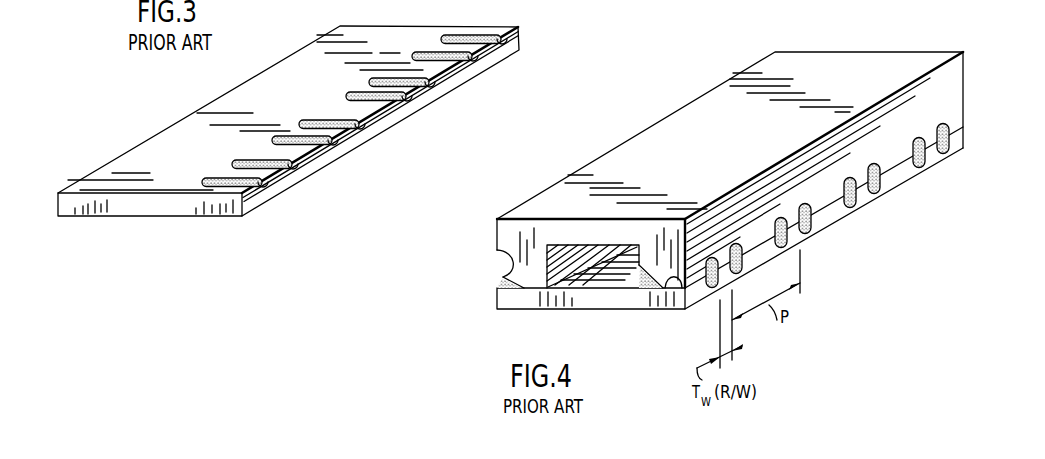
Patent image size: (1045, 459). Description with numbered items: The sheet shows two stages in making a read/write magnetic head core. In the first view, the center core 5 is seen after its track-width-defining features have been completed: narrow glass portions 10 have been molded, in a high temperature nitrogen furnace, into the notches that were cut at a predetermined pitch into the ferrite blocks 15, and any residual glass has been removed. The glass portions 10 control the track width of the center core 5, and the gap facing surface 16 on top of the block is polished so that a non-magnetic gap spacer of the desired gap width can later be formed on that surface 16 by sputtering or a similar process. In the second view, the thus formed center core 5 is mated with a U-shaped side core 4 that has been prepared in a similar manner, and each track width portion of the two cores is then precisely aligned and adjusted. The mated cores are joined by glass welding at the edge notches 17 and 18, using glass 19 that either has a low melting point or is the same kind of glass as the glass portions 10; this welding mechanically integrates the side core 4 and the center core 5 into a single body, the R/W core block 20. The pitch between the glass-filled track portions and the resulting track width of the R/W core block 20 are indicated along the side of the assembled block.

In FIG. 4, the side core 4 is at (540, 233).
In FIG. 4, the center core 5 is at (505, 309).
In FIG. 3, the glass portions 10 is at (475, 62).
In FIG. 4, the glass portions 10 is at (886, 194).
In FIG. 3, the ferrite blocks 15 is at (198, 208).
In FIG. 3, the gap facing surface 16 is at (407, 36).
In FIG. 4, the edge notch 17 is at (672, 302).
In FIG. 4, the edge notch 18 is at (508, 260).
In FIG. 4, the glass 19 is at (500, 282).
In FIG. 4, the R/W core block 20 is at (833, 66).